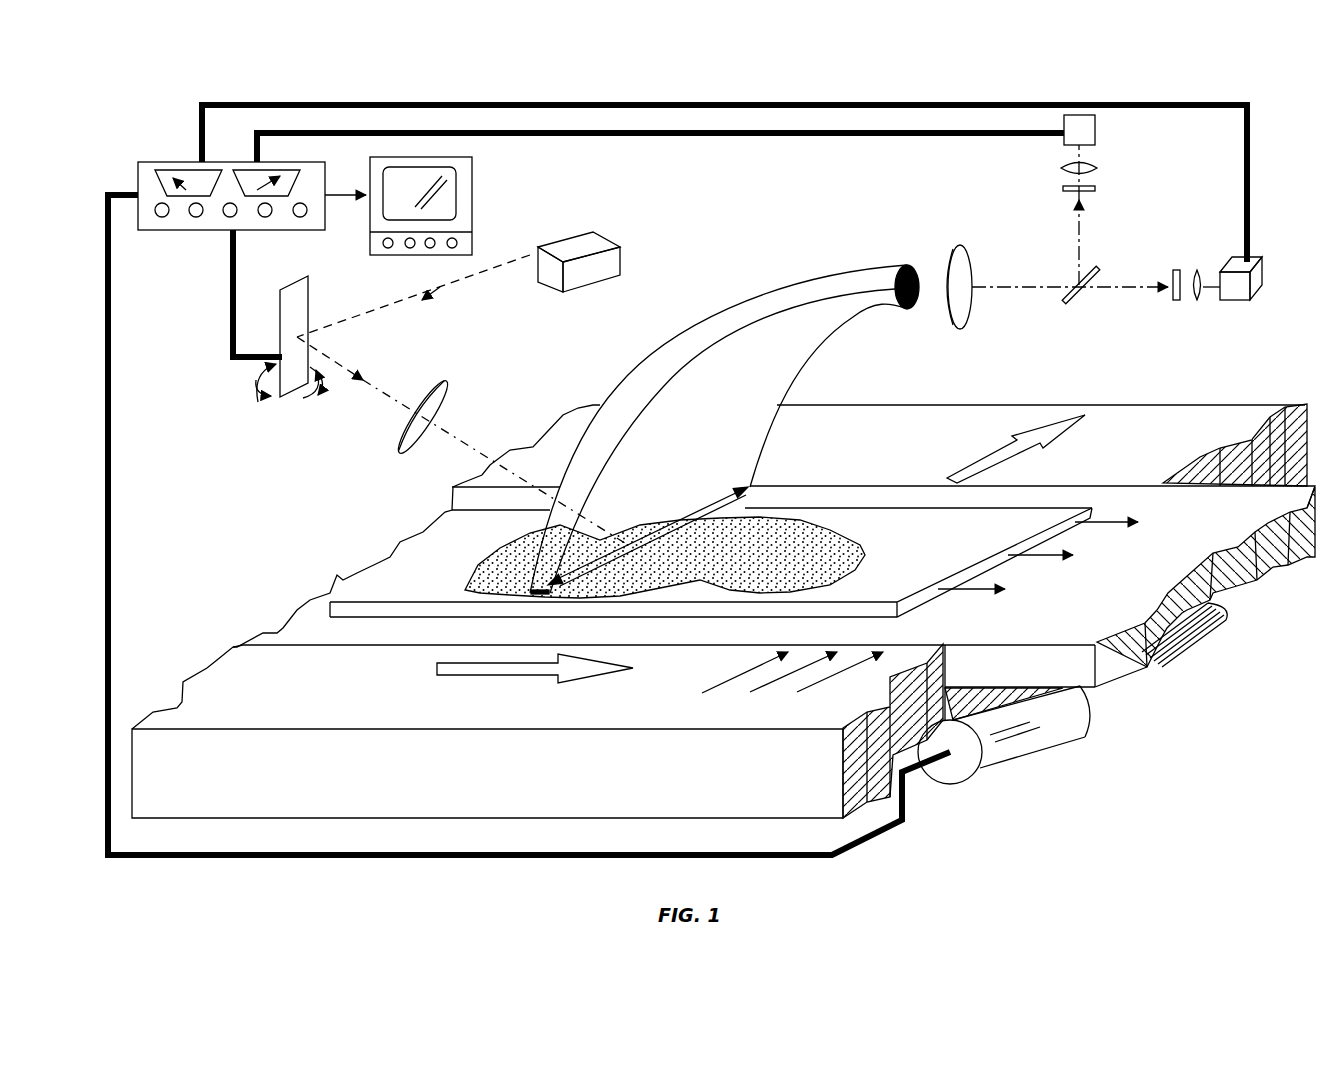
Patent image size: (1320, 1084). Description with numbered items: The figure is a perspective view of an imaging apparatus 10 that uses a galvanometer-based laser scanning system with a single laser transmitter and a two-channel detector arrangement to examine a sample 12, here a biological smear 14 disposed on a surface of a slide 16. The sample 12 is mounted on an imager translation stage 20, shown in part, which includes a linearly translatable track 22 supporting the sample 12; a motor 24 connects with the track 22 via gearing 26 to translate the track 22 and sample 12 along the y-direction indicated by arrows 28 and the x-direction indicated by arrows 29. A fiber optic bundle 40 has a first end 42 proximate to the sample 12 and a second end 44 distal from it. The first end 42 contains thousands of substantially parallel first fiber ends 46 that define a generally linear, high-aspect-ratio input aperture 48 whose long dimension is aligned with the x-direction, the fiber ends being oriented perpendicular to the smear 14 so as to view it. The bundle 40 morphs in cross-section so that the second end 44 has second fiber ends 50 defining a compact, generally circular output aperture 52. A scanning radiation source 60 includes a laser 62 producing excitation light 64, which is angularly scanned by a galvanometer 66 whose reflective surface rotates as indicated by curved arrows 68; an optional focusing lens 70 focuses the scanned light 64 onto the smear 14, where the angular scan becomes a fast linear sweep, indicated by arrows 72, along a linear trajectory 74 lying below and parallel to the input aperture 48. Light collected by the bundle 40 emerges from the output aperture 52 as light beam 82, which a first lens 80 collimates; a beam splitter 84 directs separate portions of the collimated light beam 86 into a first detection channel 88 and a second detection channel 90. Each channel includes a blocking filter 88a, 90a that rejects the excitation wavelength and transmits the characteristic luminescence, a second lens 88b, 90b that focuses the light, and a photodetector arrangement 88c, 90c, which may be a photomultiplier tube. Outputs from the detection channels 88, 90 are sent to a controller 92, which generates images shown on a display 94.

The imaging apparatus 10 is at (723, 621).
The sample 12 is at (774, 545).
The biological smear 14 is at (465, 582).
The slide 16 is at (375, 587).
The imager translation stage 20 is at (195, 668).
The linearly translatable track 22 is at (307, 623).
The motor 24 is at (1007, 745).
The gearing 26 is at (1190, 648).
The arrows indicating y-direction 28 is at (1100, 520).
The arrows indicating x-direction 29 is at (810, 690).
The fiber optic bundle 40 is at (716, 423).
The first end 42 is at (539, 600).
The second end 44 is at (903, 268).
The first fiber ends 46 is at (505, 565).
The input aperture 48 is at (749, 499).
The second fiber ends 50 is at (915, 310).
The output aperture 52 is at (920, 274).
The scanning radiation source 60 is at (407, 373).
The laser 62 is at (600, 240).
The excitation light 64 is at (382, 398).
The galvanometer 66 is at (307, 298).
The curved arrows indicating rotation 68 is at (303, 399).
The focusing lens 70 is at (442, 388).
The arrows indicating fast scanning 72 is at (617, 537).
The linear trajectory 74 is at (658, 583).
The first lens 80 is at (964, 312).
The light beam 82 is at (927, 258).
The beam splitter 84 is at (1072, 300).
The collimated light beam 86 is at (1050, 290).
The first detection channel 88 is at (1062, 200).
The blocking filter 88a is at (1062, 190).
The second lens 88b is at (1098, 172).
The photodetector arrangement 88c is at (1095, 128).
The second detection channel 90 is at (1227, 270).
The blocking filter 90a is at (1172, 298).
The second lens 90b is at (1200, 298).
The photodetector arrangement 90c is at (1260, 282).
The controller 92 is at (195, 162).
The display 94 is at (472, 192).